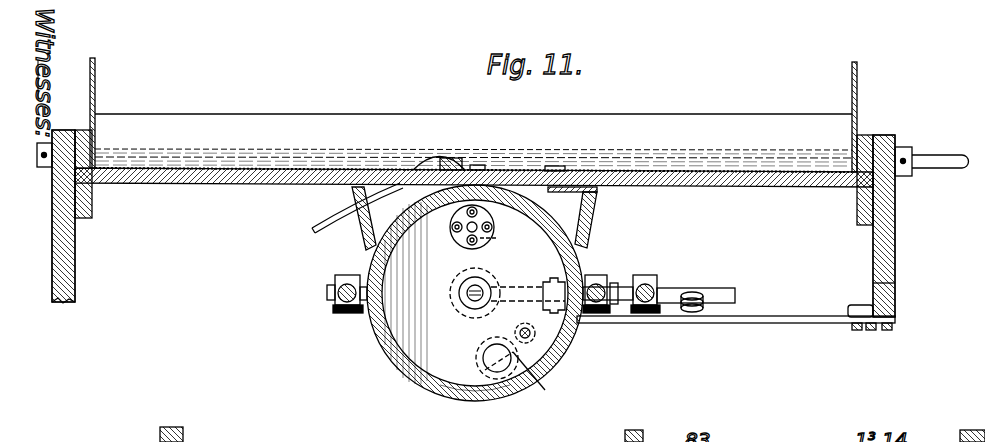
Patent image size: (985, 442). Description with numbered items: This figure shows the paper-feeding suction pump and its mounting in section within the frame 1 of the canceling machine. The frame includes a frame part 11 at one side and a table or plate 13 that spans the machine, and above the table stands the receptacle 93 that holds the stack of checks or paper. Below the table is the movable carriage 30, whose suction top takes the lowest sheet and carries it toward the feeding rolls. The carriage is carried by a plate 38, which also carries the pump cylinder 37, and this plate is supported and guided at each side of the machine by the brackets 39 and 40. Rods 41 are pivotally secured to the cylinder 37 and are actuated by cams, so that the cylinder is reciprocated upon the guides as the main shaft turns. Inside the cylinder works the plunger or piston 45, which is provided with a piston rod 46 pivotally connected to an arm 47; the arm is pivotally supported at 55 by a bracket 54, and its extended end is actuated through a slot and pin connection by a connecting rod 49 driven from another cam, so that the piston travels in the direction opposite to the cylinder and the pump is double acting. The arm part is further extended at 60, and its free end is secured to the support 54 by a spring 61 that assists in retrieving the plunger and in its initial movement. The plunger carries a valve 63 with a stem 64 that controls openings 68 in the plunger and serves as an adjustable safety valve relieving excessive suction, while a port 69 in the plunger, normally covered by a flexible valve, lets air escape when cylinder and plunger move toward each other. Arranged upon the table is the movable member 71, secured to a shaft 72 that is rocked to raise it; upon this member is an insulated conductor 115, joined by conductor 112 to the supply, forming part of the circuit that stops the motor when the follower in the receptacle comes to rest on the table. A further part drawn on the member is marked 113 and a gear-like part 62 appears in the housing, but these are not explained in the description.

The frame 1 is at (70, 283).
The frame part 11 is at (895, 282).
The table or plate 13 is at (257, 168).
The plate 38 is at (258, 186).
The receptacle 93 is at (95, 92).
The bracket 39 is at (84, 129).
The bracket 40 is at (93, 212).
The shaft 72 is at (940, 156).
The movable member 71 is at (441, 156).
The bushing 113 is at (470, 164).
The conductor 115 is at (483, 169).
The movable carriage 30 is at (556, 168).
The conductor 112 is at (330, 226).
The pump cylinder 37 is at (568, 332).
The plunger or piston 45 is at (478, 381).
The port 69 is at (536, 380).
The piston rod 46 is at (472, 311).
The stem 64 is at (465, 236).
The valve 63 is at (462, 232).
The openings 68 is at (500, 248).
The pivot 55 is at (552, 279).
The arm 47 is at (526, 322).
The gear 62 is at (483, 357).
The rods 41 is at (343, 275).
The connecting rod 49 is at (648, 276).
The spring 61 is at (707, 297).
The extension 60 is at (688, 296).
The bracket 54 is at (817, 316).